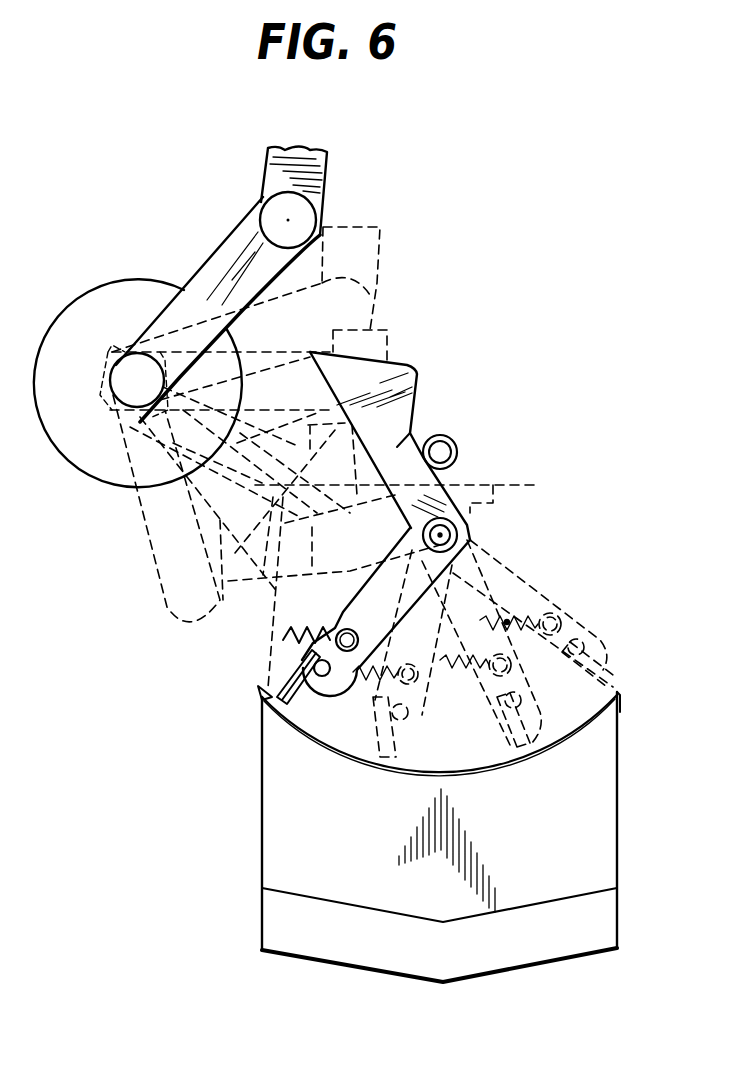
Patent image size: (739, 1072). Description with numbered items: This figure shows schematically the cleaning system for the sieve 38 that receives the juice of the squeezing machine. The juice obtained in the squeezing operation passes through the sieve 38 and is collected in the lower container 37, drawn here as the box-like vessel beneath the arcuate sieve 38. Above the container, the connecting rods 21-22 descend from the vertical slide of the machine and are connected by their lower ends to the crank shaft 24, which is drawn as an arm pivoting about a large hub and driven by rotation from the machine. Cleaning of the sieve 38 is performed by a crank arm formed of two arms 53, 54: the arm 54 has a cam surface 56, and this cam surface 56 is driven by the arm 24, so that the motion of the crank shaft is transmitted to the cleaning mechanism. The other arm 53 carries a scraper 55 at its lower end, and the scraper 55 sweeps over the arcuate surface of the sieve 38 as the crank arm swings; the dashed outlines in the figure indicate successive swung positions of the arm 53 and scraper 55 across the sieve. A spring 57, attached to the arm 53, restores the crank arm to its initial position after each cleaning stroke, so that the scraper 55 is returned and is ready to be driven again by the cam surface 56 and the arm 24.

The connecting rods 21-22 is at (320, 165).
The crank shaft 24 is at (236, 256).
The cam surface 56 is at (417, 373).
The crank arm 54 is at (397, 446).
The crank arm 53 is at (340, 616).
The spring 57 is at (283, 640).
The scraper 55 is at (278, 700).
The sieve 38 is at (303, 732).
The lower container 37 is at (595, 850).